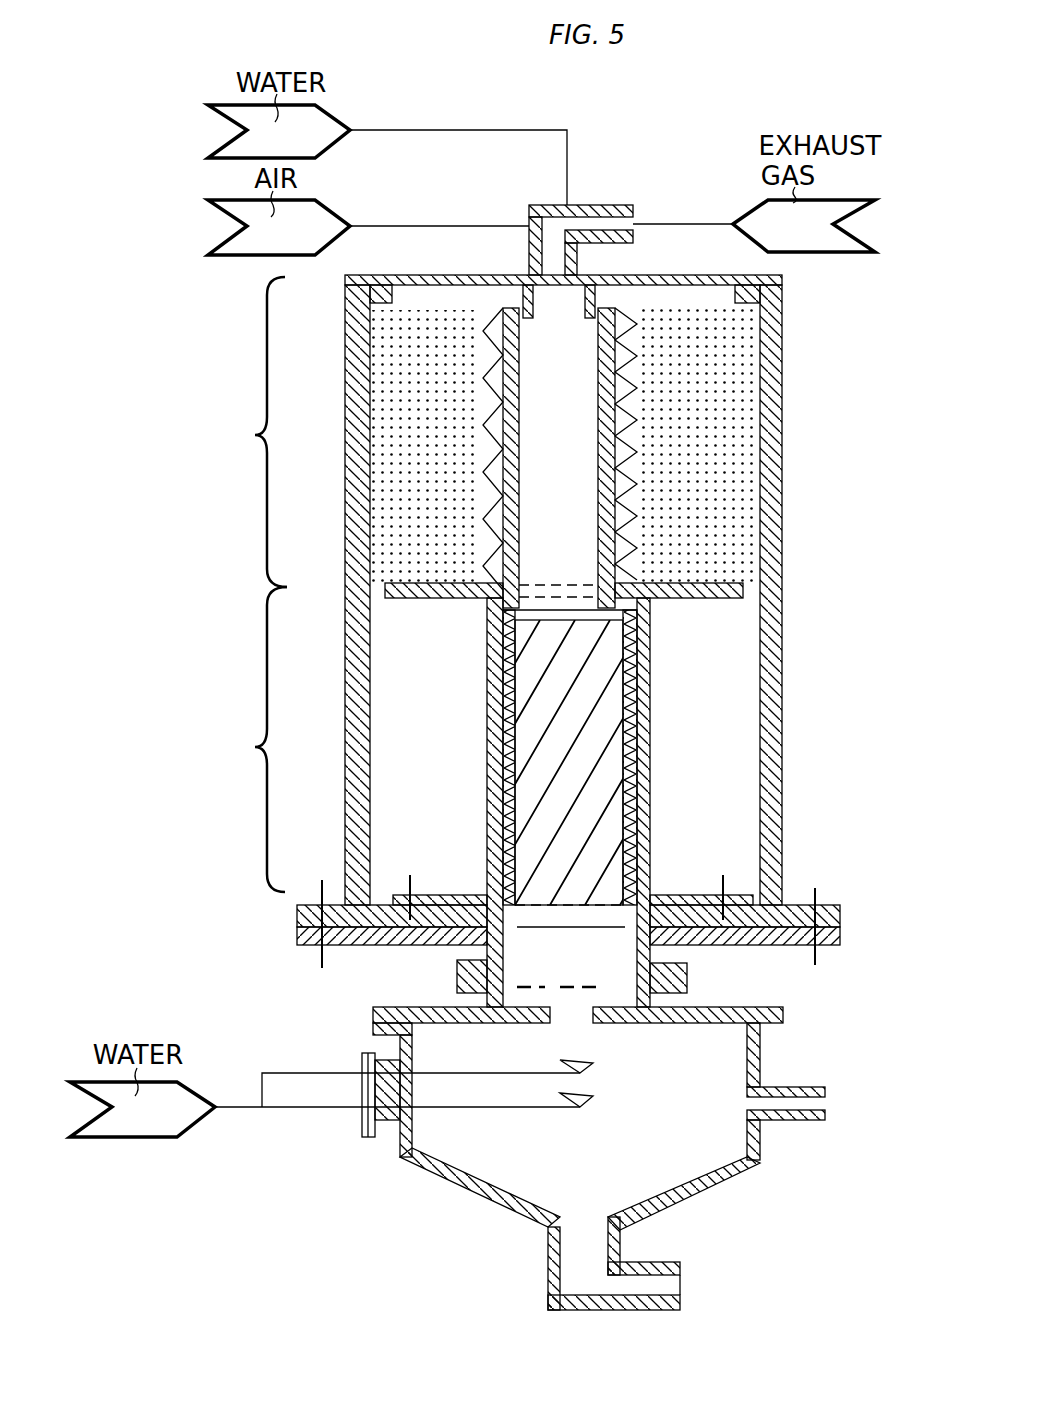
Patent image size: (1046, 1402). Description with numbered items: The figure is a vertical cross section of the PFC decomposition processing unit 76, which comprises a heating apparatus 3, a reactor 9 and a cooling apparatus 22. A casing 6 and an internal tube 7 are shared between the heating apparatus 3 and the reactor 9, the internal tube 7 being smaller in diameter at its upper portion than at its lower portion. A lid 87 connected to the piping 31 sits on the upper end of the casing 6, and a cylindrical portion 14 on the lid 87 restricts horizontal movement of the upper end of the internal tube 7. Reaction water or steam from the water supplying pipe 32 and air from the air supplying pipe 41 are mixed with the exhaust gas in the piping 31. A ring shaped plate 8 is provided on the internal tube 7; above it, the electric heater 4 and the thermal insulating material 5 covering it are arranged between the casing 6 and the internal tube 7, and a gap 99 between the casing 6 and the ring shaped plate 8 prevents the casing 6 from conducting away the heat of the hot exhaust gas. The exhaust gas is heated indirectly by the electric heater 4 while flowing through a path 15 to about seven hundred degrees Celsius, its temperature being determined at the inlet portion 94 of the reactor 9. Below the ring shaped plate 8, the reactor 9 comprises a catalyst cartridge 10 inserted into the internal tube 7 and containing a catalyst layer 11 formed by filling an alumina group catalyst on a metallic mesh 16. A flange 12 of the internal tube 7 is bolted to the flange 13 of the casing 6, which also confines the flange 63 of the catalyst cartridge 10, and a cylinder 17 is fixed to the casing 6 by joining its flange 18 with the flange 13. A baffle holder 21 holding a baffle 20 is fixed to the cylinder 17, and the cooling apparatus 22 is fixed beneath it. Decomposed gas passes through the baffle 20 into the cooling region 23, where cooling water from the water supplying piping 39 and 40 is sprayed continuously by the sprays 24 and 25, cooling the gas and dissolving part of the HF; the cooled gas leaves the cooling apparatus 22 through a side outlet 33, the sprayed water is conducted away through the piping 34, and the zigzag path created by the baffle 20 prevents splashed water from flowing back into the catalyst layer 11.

The heating apparatus 3 is at (258, 432).
The electric heater 4 is at (520, 422).
The thermal insulating material 5 is at (740, 497).
The casing 6 is at (783, 409).
The internal tube 7 is at (599, 433).
The ring shaped plate 8 is at (440, 600).
The reactor 9 is at (258, 739).
The catalyst cartridge 10 is at (650, 808).
The catalyst layer 11 is at (505, 713).
The flange of the internal pipe 12 is at (686, 896).
The flange of the casing 13 is at (832, 900).
The cylindrical portion 14 is at (535, 310).
The path 15 is at (522, 308).
The metallic mesh 16 is at (570, 946).
The cylinder 17 is at (672, 972).
The flange 18 is at (820, 947).
The baffle 20 is at (613, 1023).
The baffle holder 21 is at (503, 1024).
The cooling apparatus 22 is at (438, 1179).
The cooling region 23 is at (687, 1117).
The spray 24 is at (587, 1110).
The spray 25 is at (592, 1068).
The piping 31 is at (592, 204).
The water supplying pipe 32 is at (478, 130).
The outlet pipe 33 is at (791, 1122).
The piping 34 is at (672, 1264).
The water supplying piping 39 is at (242, 1108).
The water supplying piping 40 is at (290, 1074).
The air supplying pipe 41 is at (411, 226).
The flange of the catalyst cartridge 63 is at (470, 895).
The PFC decomposition processing unit 76 is at (832, 690).
The lid 87 is at (656, 278).
The inlet portion 94 is at (539, 602).
The gap 99 is at (752, 592).